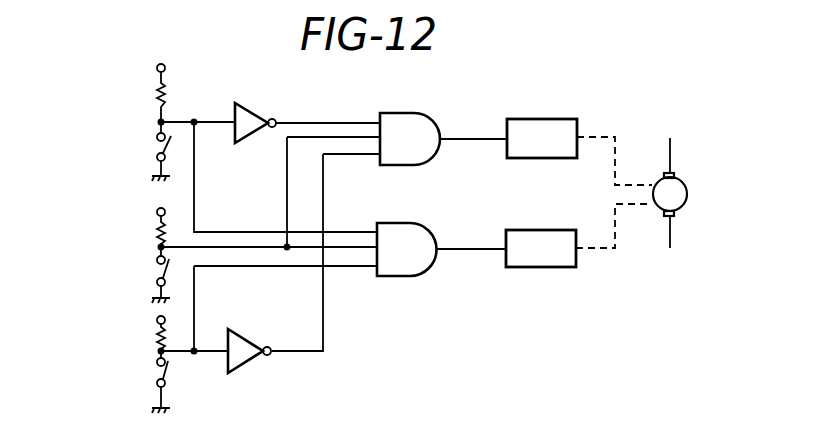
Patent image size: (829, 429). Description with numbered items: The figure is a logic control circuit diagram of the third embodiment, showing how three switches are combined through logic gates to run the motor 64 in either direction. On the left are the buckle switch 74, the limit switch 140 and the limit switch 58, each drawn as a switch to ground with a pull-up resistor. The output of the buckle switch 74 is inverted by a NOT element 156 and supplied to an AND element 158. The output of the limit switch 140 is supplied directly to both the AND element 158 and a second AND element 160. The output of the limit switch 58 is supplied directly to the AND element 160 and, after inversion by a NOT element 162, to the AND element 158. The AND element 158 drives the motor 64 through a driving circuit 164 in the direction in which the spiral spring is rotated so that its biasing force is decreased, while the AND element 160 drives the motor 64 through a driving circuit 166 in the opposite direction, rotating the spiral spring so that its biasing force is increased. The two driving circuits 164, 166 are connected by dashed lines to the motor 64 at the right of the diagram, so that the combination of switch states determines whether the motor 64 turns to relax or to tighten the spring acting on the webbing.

The buckle switch 74 is at (157, 148).
The limit switch 140 is at (155, 275).
The limit switch 58 is at (155, 380).
The NOT element 156 is at (245, 103).
The NOT element 162 is at (260, 361).
The AND element 158 is at (408, 113).
The AND element 160 is at (403, 277).
The driving circuit 164 is at (538, 119).
The driving circuit 166 is at (537, 230).
The motor 64 is at (688, 180).